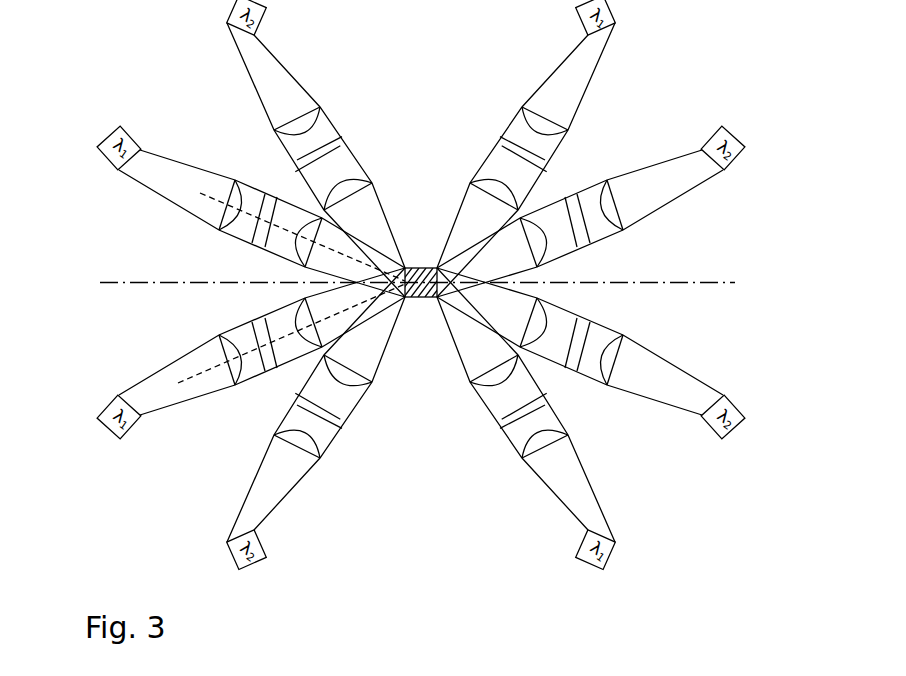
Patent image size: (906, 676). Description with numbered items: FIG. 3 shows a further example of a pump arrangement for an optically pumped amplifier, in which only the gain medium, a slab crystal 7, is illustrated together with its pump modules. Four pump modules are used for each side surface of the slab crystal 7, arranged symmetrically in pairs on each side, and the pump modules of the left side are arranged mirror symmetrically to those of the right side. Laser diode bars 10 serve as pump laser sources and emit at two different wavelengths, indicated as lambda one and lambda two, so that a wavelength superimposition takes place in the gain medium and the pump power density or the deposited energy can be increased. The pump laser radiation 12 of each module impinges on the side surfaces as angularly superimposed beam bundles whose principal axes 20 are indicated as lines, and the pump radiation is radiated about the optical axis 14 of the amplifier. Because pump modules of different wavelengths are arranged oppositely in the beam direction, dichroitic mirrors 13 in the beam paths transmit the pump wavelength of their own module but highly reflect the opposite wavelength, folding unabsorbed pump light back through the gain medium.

The slab crystal 7 is at (420, 297).
The laser diode bar 10 is at (723, 127).
The pump laser radiation 12 is at (470, 215).
The dichroitic mirror 13 is at (372, 440).
The optical axis 14 is at (646, 281).
The principal axis 20 is at (215, 198).